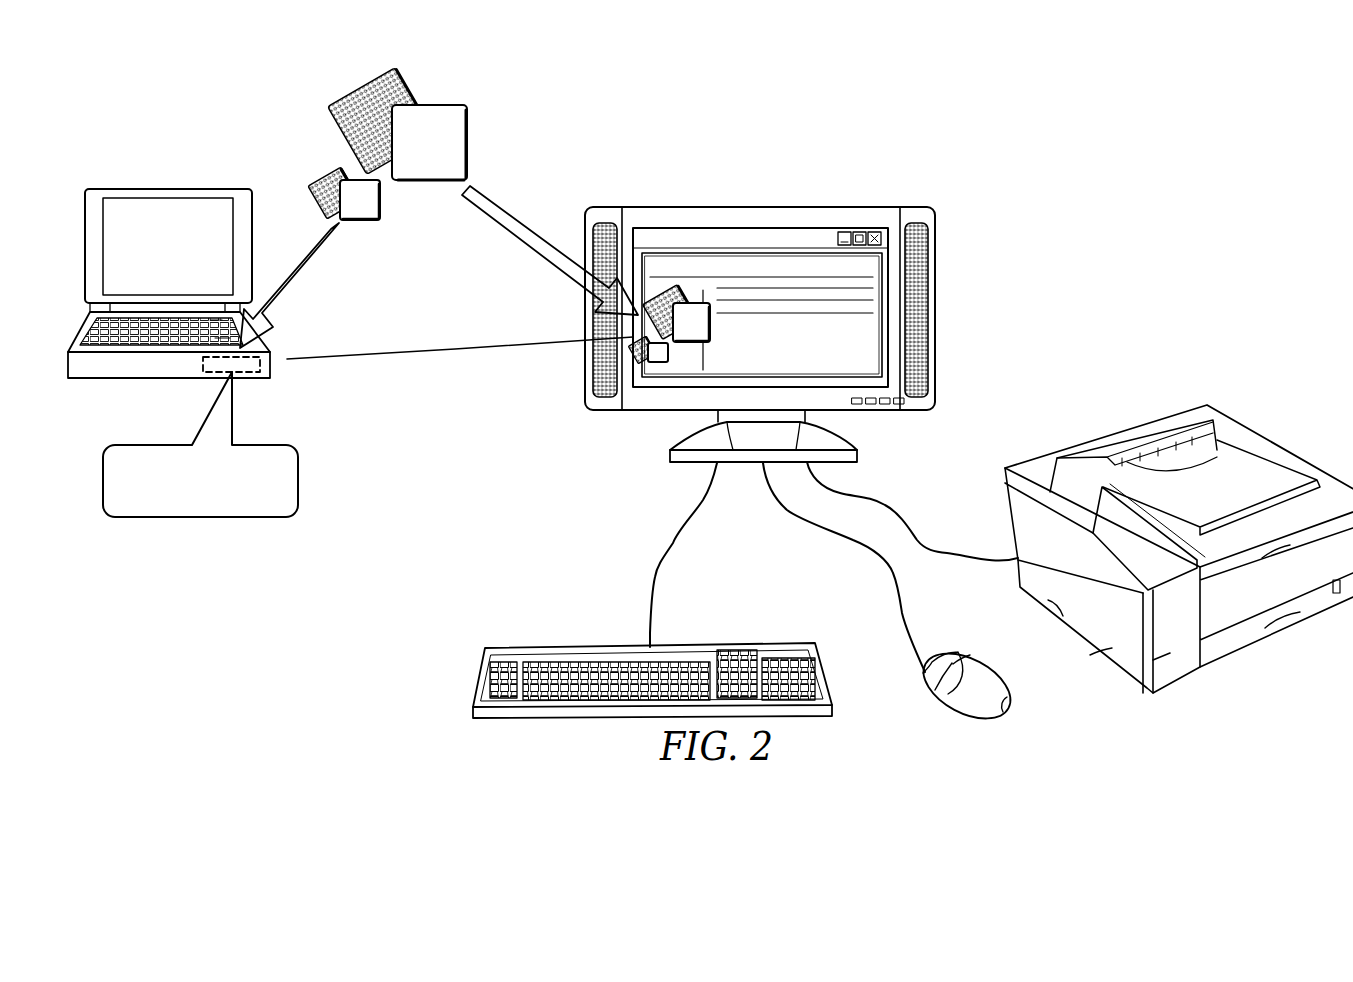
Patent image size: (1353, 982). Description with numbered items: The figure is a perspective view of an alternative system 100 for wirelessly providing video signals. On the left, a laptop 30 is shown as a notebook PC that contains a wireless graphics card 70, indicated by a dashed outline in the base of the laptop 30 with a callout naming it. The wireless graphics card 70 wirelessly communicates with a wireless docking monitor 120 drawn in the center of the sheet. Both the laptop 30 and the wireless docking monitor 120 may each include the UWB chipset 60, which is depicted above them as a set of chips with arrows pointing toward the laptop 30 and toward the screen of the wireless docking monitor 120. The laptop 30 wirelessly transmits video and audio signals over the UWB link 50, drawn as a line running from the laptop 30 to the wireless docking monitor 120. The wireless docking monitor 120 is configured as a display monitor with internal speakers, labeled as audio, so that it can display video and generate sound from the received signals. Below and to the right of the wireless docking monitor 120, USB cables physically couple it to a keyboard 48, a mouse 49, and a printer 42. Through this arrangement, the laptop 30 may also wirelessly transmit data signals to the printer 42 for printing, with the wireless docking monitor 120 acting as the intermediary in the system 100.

The system 100 is at (1123, 133).
The laptop 30 is at (183, 262).
The UWB chipset 60 is at (422, 203).
The UWB link 50 is at (428, 351).
The wireless graphics card 70 is at (102, 483).
The wireless docking monitor 120 is at (913, 208).
The keyboard 48 is at (482, 680).
The mouse 49 is at (1011, 703).
The printer 42 is at (1250, 644).